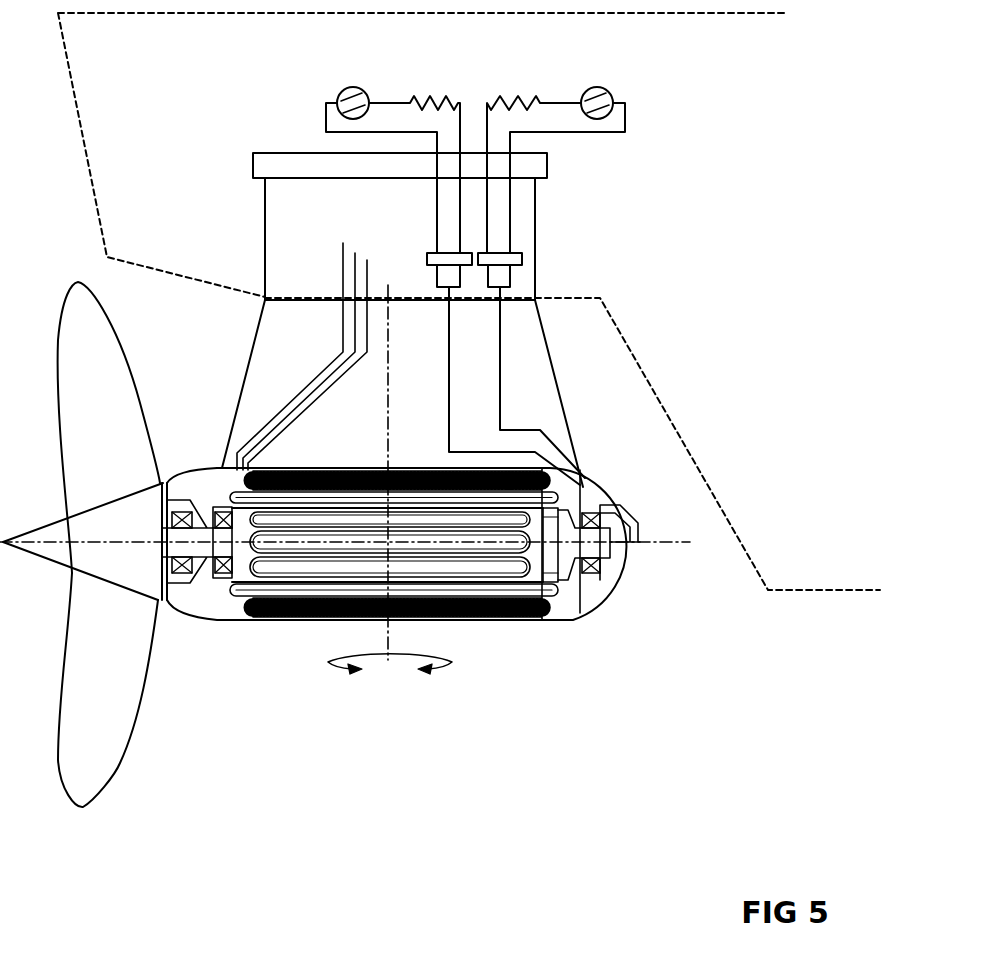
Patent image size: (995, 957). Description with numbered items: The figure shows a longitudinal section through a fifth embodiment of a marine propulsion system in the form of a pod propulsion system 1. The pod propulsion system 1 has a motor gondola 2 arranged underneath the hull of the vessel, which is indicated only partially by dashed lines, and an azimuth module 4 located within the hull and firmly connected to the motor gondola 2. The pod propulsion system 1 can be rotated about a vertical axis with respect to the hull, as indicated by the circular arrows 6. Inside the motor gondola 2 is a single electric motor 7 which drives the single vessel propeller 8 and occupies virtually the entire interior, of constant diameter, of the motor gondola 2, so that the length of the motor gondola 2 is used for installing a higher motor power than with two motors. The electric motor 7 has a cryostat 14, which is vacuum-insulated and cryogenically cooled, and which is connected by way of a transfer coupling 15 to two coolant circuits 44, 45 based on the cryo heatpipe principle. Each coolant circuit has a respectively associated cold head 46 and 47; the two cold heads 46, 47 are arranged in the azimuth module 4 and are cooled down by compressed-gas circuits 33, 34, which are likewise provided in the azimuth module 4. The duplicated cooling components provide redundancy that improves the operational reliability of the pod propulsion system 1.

The pod propulsion system 1 is at (579, 355).
The motor gondola 2 is at (601, 605).
The azimuth module 4 is at (266, 242).
The circular arrows 6 is at (378, 640).
The electric motor 7 is at (481, 601).
The vessel propeller 8 is at (118, 763).
The cryostat 14 is at (240, 567).
The transfer coupling 15 is at (553, 613).
The compressed-gas circuit 33 is at (326, 110).
The compressed-gas circuit 34 is at (625, 113).
The coolant circuit 44 is at (450, 437).
The coolant circuit 45 is at (500, 405).
The cold head 46 is at (437, 280).
The cold head 47 is at (512, 282).